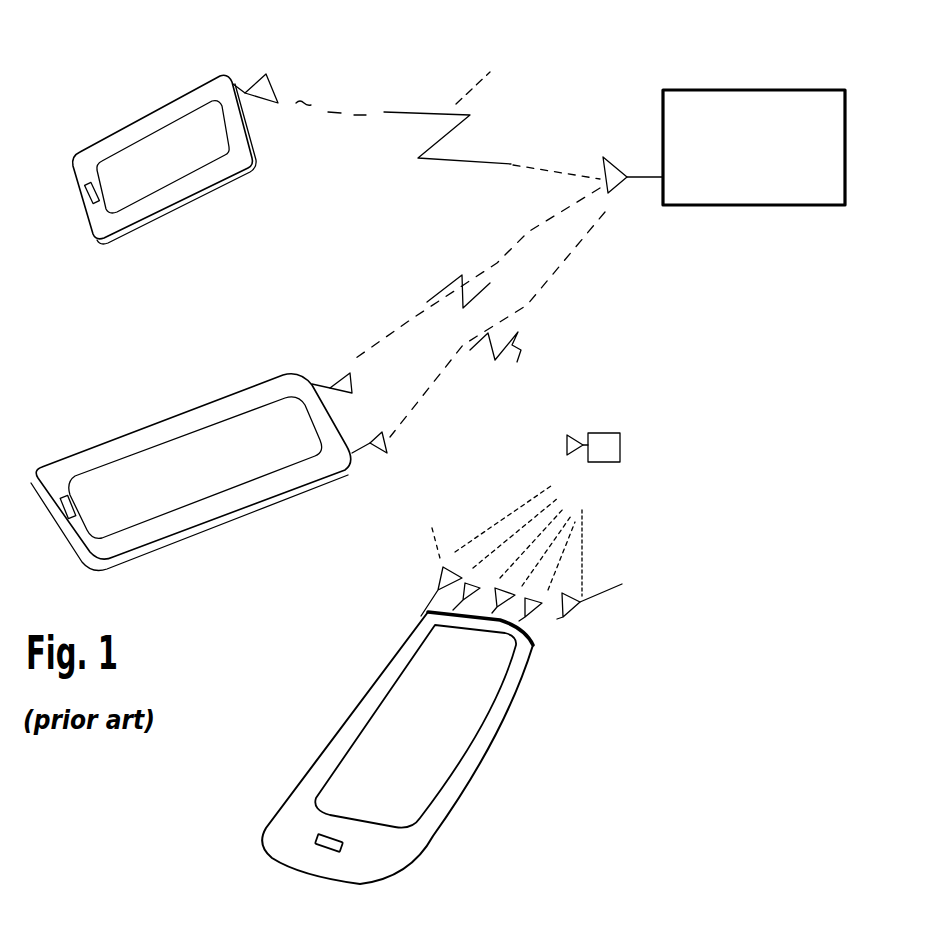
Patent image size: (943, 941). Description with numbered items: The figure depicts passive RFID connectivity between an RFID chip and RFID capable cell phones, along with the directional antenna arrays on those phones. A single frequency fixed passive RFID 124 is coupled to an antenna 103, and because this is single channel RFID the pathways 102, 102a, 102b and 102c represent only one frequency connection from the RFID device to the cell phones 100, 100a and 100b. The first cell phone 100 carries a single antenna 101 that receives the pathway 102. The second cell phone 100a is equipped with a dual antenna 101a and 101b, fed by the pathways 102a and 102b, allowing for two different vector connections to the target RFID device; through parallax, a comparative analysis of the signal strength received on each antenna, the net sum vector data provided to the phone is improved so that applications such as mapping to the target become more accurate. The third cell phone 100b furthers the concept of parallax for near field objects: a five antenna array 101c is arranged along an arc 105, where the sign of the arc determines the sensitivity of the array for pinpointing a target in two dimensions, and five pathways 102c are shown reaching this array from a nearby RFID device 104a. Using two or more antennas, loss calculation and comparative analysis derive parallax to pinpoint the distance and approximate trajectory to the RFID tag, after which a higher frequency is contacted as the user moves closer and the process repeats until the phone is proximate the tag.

The RFID capable cell phone 100 is at (118, 236).
The cell phone 100a is at (199, 541).
The cell phone 100b is at (482, 770).
The antenna 101 is at (248, 73).
The antenna 101a is at (347, 372).
The antenna 101b is at (388, 452).
The five antenna array 101c is at (562, 620).
The pathway 102 is at (448, 125).
The pathway 102a is at (462, 276).
The pathway 102b is at (497, 324).
The pathways 102c is at (594, 474).
The antenna 103 is at (609, 197).
The RFID device 104a is at (620, 447).
The arc 105 is at (624, 587).
The single frequency fixed passive RFID 124 is at (766, 206).